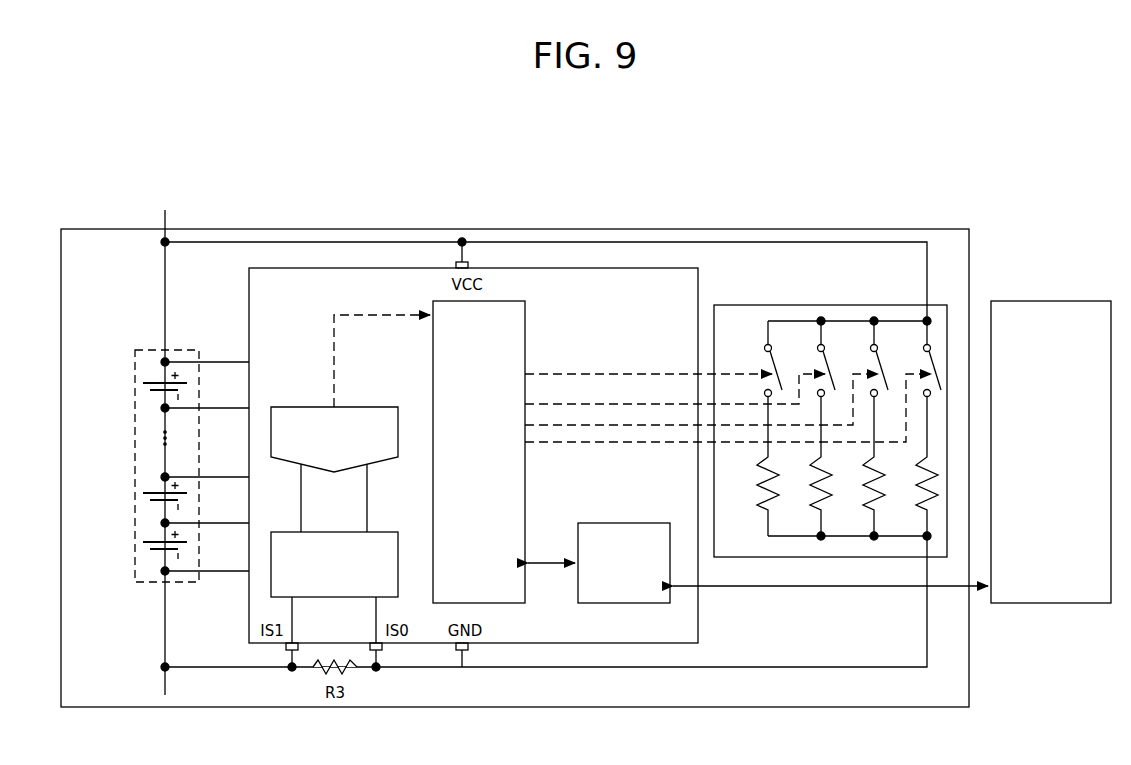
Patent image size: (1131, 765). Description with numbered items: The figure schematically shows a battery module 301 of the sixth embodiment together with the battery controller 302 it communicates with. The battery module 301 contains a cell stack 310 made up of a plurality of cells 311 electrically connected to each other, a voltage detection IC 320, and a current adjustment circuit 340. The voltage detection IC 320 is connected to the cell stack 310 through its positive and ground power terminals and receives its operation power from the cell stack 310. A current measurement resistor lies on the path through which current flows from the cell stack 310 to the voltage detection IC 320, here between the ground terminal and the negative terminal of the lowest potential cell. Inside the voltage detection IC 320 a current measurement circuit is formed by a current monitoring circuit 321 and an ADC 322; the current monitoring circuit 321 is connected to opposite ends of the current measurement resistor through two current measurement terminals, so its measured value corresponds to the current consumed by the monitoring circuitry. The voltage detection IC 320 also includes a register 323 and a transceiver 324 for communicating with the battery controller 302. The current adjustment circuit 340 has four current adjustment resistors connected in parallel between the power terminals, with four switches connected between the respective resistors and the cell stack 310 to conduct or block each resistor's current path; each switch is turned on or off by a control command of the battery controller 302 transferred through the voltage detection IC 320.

The battery module 301 is at (942, 229).
The battery controller 302 is at (1049, 301).
The cell stack 310 is at (162, 466).
The cell 311 is at (143, 383).
The voltage detection IC 320 is at (581, 268).
The current monitoring circuit 321 is at (278, 532).
The ADC 322 is at (278, 407).
The register 323 is at (525, 318).
The transceiver 324 is at (619, 523).
The current adjustment circuit 340 is at (848, 305).